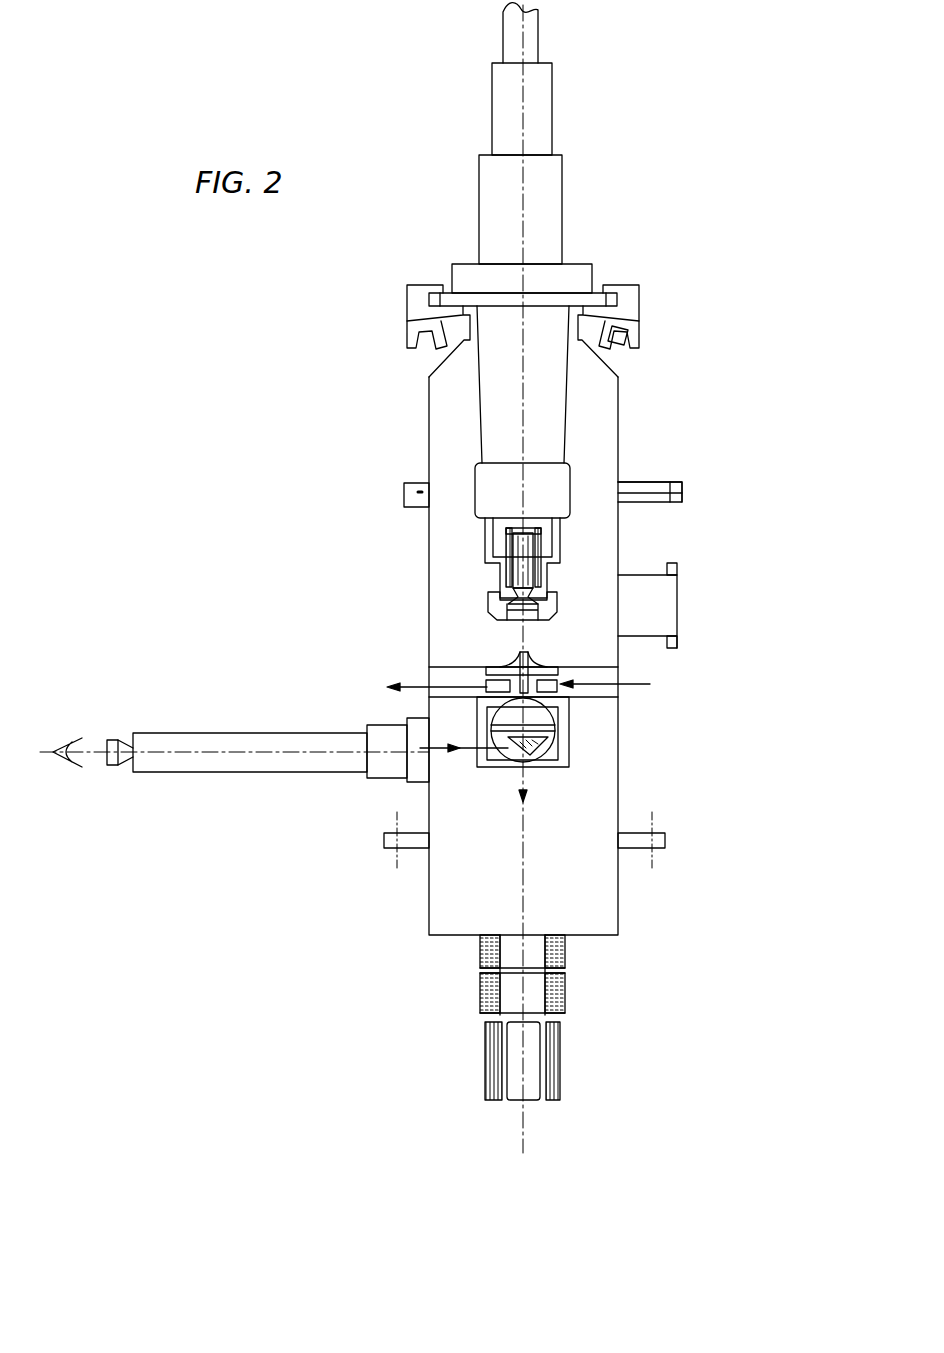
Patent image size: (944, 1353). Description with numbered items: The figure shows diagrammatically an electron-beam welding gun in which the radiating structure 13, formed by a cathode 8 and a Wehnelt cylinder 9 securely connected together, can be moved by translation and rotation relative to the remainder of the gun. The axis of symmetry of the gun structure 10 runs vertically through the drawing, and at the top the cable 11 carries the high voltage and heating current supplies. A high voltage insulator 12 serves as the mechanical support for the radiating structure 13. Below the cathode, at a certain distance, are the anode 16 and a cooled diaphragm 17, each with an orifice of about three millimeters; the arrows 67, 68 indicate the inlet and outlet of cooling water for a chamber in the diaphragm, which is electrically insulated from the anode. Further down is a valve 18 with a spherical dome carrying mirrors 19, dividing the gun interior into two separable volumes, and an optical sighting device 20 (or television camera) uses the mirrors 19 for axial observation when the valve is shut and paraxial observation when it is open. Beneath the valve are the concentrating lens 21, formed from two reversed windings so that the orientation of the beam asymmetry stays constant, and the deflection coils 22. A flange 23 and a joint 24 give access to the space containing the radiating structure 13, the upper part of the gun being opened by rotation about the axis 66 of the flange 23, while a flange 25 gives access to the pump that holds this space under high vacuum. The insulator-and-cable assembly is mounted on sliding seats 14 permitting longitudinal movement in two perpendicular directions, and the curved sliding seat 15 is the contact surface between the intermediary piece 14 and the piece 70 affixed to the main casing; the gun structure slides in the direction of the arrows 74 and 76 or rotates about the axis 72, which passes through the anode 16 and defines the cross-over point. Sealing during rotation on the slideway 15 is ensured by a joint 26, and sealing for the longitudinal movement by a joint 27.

The cathode 8 is at (500, 615).
The Wehnelt cylinder 9 is at (489, 605).
The axis of symmetry of the gun structure 10 is at (522, 95).
The cable 11 is at (540, 136).
The high voltage insulator 12 is at (550, 440).
The radiating structure 13 is at (563, 540).
The sliding seats 14 is at (441, 287).
The curved sliding seat 15 is at (640, 321).
The anode 16 is at (545, 665).
The cooled diaphragm 17 is at (596, 690).
The valve 18 is at (538, 718).
The mirrors 19 is at (540, 747).
The optical sighting device 20 is at (412, 778).
The concentrating lens 21 is at (566, 983).
The deflection coils 22 is at (550, 1065).
The flange 23 is at (685, 500).
The joint 24 is at (625, 490).
The flange for access to the pump 25 is at (668, 597).
The joint 26 is at (450, 316).
The joint 27 is at (585, 306).
The axis of the flange 66 is at (682, 490).
The arrow 67 is at (418, 688).
The arrow 68 is at (637, 684).
The piece 70 is at (598, 335).
The axis 72 is at (510, 663).
The arrow 74 is at (400, 272).
The arrow 76 is at (648, 273).